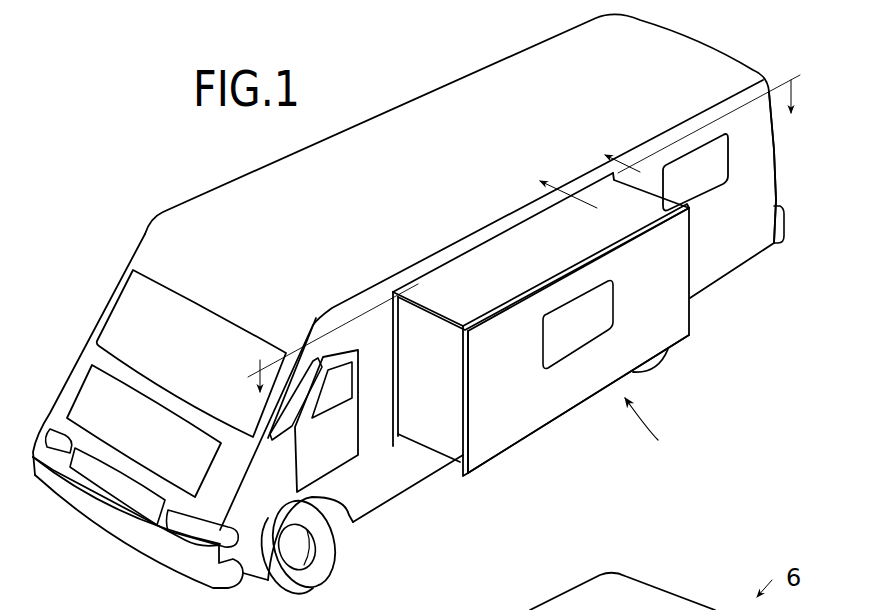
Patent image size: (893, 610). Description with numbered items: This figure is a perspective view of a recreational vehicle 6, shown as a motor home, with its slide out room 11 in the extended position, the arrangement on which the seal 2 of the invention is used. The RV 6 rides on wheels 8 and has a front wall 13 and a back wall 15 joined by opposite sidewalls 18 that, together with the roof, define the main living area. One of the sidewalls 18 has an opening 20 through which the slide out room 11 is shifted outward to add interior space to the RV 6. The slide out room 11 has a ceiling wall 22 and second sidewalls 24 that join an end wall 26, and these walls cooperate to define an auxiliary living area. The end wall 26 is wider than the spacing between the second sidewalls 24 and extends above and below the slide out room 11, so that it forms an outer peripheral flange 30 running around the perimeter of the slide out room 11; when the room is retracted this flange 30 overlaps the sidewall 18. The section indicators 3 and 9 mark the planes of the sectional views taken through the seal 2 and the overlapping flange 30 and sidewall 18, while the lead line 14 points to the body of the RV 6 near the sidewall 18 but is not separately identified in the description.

The seal 2 is at (515, 353).
The section line 3- 3 is at (577, 166).
The recreational vehicle 6 is at (700, 23).
The wheels 8 is at (335, 558).
The section line 9- 9 is at (526, 248).
The slide out room 11 is at (663, 427).
The front wall 13 is at (152, 253).
The side wall 14 is at (678, 326).
The back wall 15 is at (779, 170).
The sidewall 18 is at (736, 238).
The opening 20 is at (428, 268).
The ceiling wall 22 is at (560, 261).
The second sidewalls 24 is at (440, 430).
The end wall 26 is at (543, 418).
The outer peripheral flange 30 is at (458, 456).